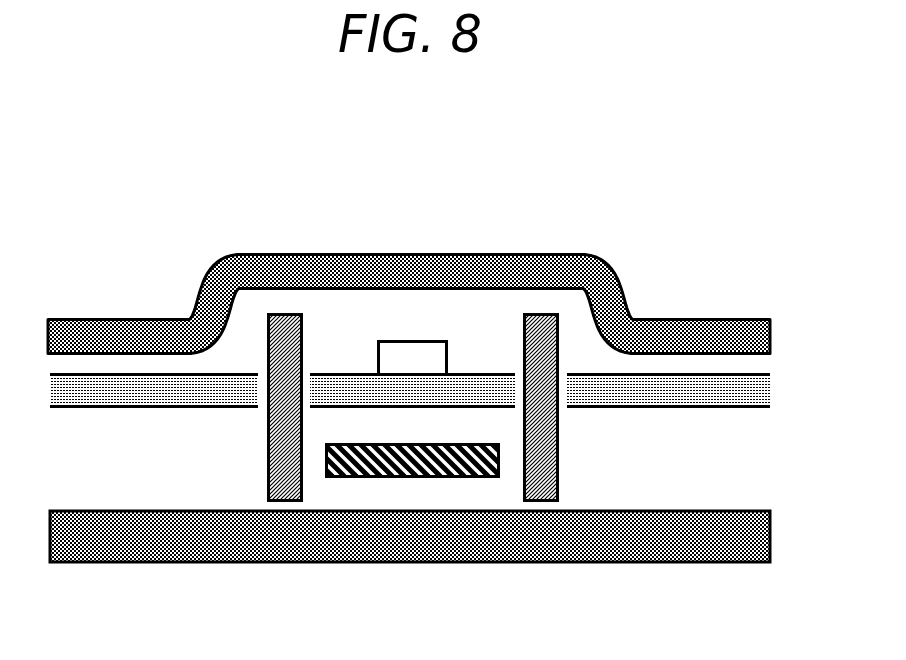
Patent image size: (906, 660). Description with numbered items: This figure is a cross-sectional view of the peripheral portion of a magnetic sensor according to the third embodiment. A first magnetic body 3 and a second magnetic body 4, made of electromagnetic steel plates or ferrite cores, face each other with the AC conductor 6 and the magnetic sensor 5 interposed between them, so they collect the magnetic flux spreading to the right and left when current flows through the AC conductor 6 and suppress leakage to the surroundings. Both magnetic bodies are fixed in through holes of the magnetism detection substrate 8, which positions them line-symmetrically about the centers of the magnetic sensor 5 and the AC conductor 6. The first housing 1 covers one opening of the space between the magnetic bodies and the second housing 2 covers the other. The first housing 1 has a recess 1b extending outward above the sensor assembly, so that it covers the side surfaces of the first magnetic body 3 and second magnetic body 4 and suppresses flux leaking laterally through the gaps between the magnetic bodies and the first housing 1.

The first housing 1 is at (502, 252).
The recess 1b is at (184, 269).
The second housing 2 is at (158, 543).
The first magnetic body 3 is at (282, 462).
The second magnetic body 4 is at (547, 462).
The magnetic sensor 5 is at (395, 348).
The AC conductor 6 is at (410, 463).
The magnetism detection substrate 8 is at (157, 402).